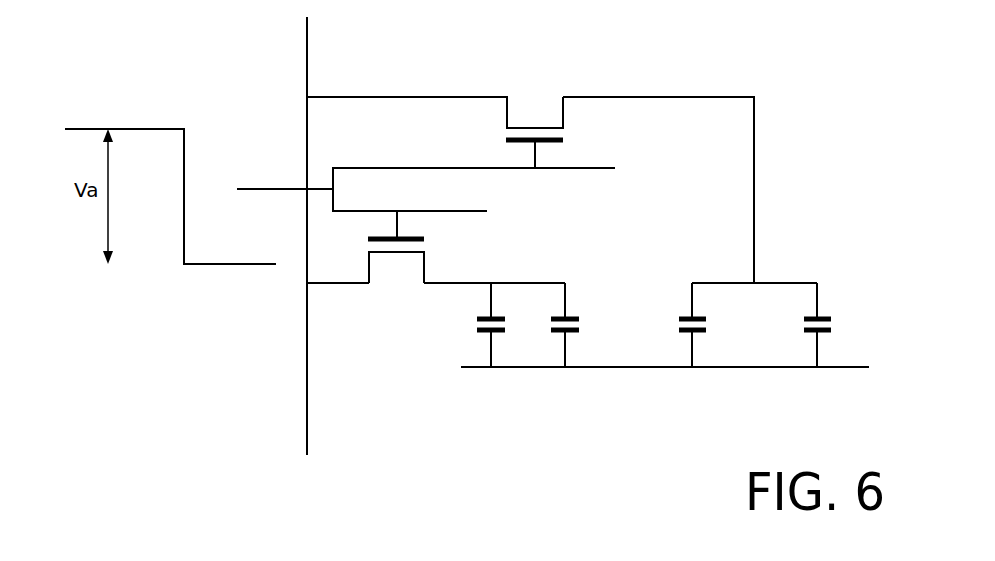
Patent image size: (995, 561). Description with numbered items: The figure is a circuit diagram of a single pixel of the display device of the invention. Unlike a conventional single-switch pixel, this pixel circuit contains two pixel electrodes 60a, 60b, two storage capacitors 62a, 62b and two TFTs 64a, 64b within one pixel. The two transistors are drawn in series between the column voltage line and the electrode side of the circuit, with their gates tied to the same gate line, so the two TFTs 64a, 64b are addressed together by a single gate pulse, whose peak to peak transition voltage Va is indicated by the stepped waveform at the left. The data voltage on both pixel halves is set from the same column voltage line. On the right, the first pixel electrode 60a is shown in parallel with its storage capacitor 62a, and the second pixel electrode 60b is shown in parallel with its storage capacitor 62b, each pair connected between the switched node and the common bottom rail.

The TFT 64a is at (563, 112).
The TFT 64b is at (424, 260).
The storage capacitor 62b is at (477, 329).
The pixel electrode 60b is at (579, 330).
The pixel electrode 60a is at (706, 330).
The storage capacitor 62a is at (831, 330).